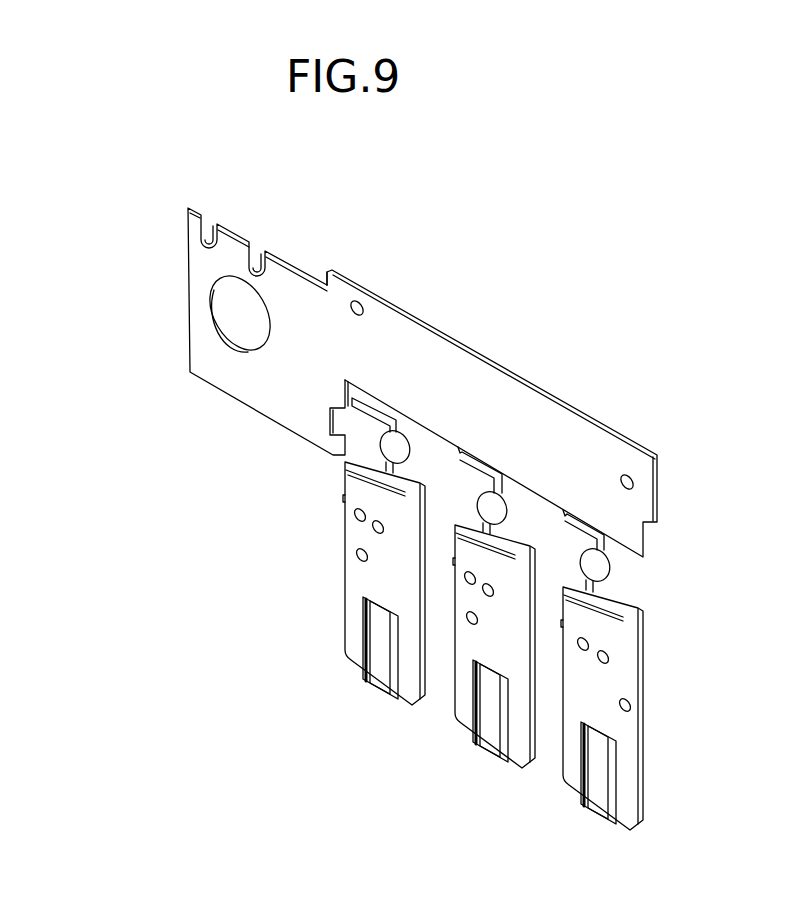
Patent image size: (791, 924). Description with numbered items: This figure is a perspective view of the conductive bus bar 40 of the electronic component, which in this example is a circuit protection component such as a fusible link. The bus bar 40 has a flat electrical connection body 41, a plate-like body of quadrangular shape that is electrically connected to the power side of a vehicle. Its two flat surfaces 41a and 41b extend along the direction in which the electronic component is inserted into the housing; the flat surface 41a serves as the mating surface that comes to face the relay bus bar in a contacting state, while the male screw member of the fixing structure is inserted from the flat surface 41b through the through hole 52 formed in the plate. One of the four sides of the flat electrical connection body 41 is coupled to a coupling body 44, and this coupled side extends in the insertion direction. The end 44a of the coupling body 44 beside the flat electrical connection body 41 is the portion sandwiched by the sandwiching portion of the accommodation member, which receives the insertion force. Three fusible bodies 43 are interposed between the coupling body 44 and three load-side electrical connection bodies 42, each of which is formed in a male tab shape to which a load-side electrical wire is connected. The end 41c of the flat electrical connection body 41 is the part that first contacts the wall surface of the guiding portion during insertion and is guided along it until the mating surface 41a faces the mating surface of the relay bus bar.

The bus bar 40 is at (464, 208).
The flat electrical connection body 41 is at (232, 357).
The flat surface (mating surface) 41a is at (238, 234).
The flat surface 41b is at (205, 260).
The end of the flat electrical connection body 41c is at (263, 418).
The through hole 52 is at (237, 314).
The coupling body 44 is at (555, 427).
The end of the coupling body 44a is at (335, 337).
The fusible body 43 is at (385, 452).
The load-side electrical connection body 42 is at (377, 655).